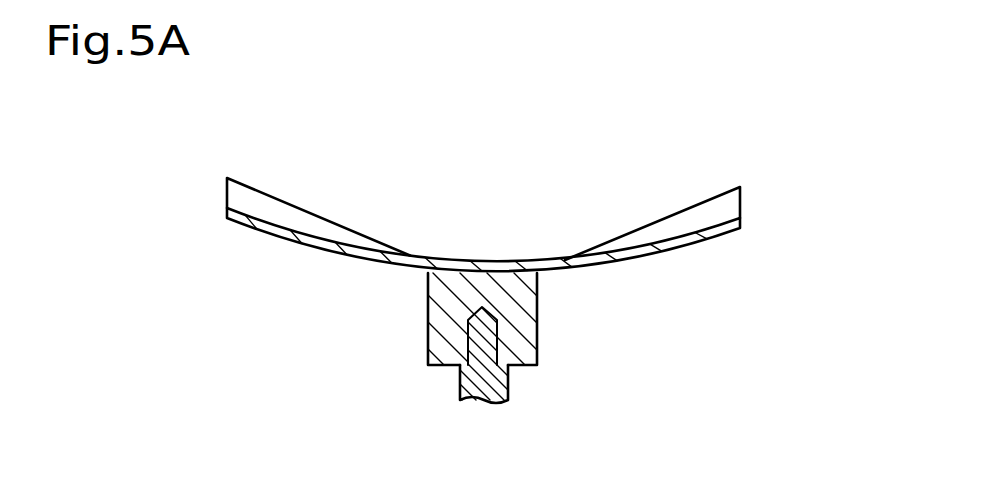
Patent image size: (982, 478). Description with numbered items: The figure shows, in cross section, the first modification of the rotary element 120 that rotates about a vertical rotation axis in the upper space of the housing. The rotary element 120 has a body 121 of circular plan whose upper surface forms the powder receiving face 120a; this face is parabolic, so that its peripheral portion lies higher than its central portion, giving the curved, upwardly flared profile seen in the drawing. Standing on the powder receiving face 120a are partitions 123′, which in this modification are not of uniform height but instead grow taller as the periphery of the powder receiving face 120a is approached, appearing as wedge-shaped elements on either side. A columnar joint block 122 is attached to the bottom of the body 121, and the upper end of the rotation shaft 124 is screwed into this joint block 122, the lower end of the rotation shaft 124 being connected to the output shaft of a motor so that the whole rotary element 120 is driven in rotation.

The rotary element 120 is at (690, 246).
The powder receiving face 120a is at (508, 262).
The body 121 is at (332, 253).
The joint block 122 is at (525, 328).
The partition 123′ is at (257, 206).
The rotation shaft 124 is at (500, 387).